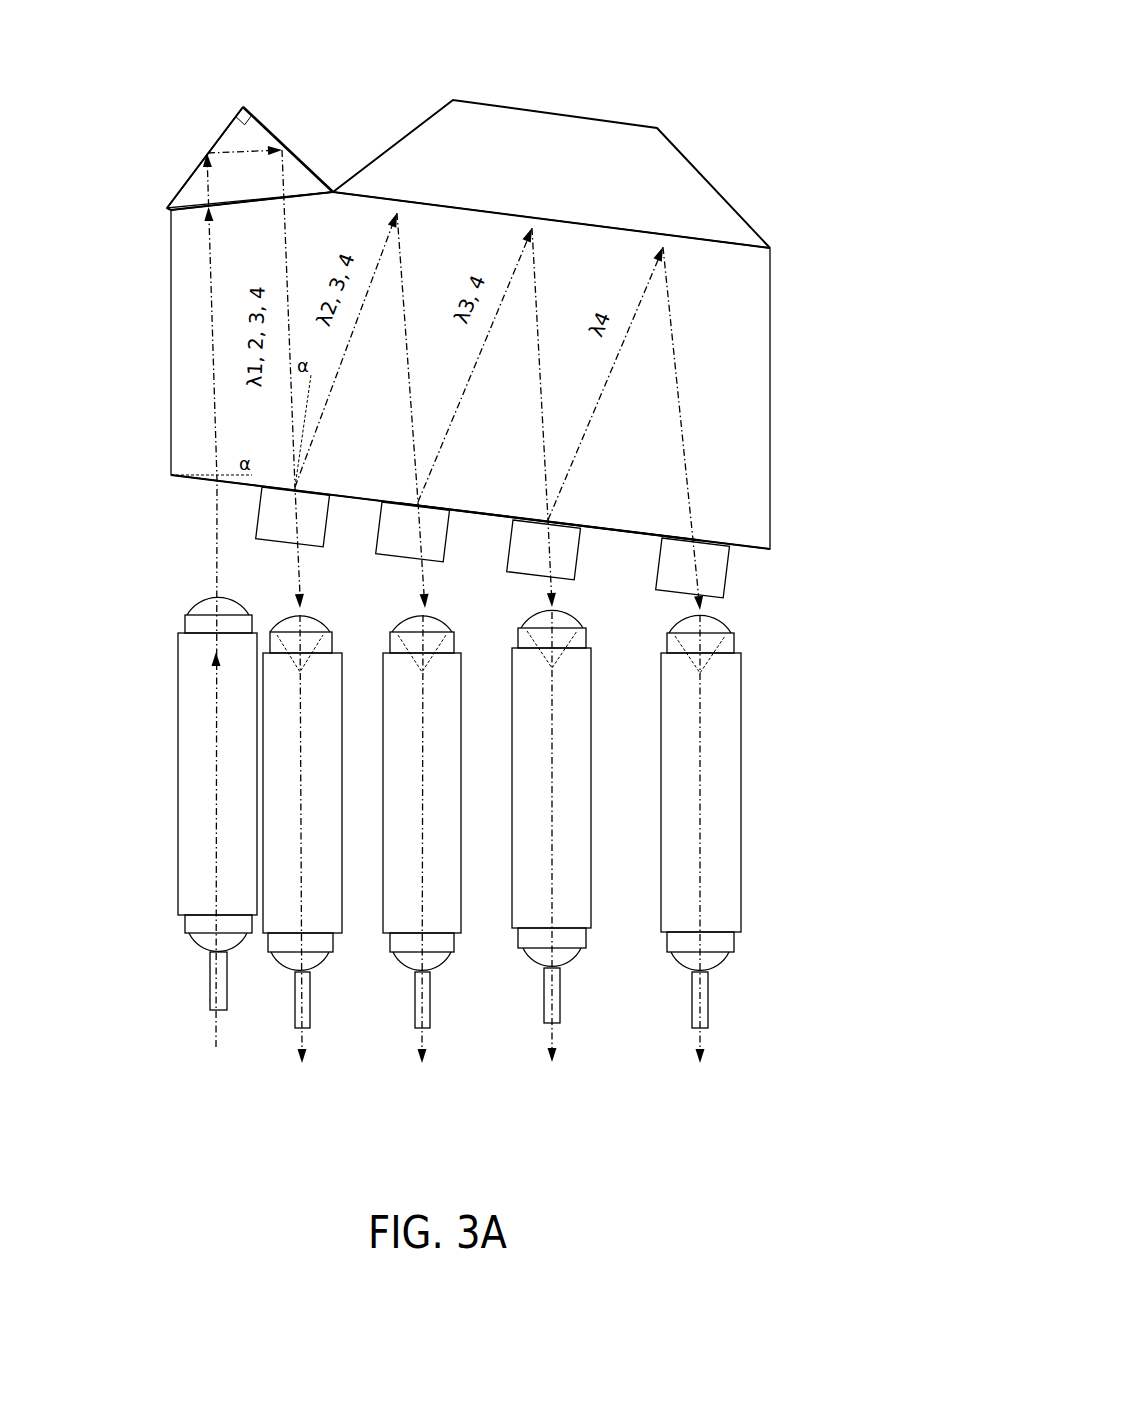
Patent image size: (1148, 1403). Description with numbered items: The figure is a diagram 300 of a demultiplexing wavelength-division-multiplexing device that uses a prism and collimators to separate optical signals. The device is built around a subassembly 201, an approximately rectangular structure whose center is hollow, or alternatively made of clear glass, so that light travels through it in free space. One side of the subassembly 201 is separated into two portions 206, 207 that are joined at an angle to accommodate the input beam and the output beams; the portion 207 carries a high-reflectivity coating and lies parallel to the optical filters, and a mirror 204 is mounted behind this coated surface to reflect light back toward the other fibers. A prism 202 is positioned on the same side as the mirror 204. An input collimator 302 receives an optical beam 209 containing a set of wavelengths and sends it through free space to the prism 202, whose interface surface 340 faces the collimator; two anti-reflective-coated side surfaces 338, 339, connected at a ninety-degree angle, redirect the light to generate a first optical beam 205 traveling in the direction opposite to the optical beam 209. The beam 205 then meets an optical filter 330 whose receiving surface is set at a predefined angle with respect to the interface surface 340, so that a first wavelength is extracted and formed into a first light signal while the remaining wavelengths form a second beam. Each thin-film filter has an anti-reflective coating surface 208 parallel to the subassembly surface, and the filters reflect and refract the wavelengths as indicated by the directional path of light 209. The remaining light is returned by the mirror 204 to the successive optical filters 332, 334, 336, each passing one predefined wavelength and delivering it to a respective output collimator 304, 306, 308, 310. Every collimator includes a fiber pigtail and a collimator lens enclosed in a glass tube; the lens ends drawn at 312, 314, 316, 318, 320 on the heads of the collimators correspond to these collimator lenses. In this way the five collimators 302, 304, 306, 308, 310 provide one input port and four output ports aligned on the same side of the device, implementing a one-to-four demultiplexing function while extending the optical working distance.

The diagram 300 is at (762, 37).
The subassembly 201 is at (483, 372).
The prism 202 is at (225, 144).
The mirror 204 is at (563, 113).
The first optical beam 205 is at (287, 273).
The portion of subassembly side 206 is at (197, 211).
The surface with high reflectivity coating 207 is at (710, 245).
The anti-reflective coating surface 208 is at (561, 520).
The optical beam 209 is at (215, 493).
The side surface 338 is at (185, 180).
The side surface 339 is at (307, 163).
The interface surface 340 is at (180, 206).
The optical filter 330 is at (275, 542).
The optical filter 332 is at (380, 530).
The optical filter 334 is at (582, 548).
The optical filter 336 is at (730, 572).
The lens 312 is at (207, 600).
The lens 314 is at (311, 616).
The lens 316 is at (434, 619).
The lens 318 is at (534, 609).
The lens 320 is at (721, 619).
The input collimator 302 is at (190, 793).
The collimator 304 is at (319, 851).
The collimator 306 is at (444, 851).
The collimator 308 is at (551, 832).
The collimator 310 is at (723, 850).